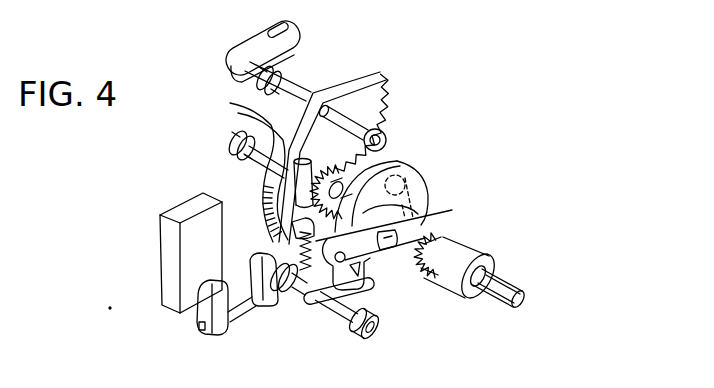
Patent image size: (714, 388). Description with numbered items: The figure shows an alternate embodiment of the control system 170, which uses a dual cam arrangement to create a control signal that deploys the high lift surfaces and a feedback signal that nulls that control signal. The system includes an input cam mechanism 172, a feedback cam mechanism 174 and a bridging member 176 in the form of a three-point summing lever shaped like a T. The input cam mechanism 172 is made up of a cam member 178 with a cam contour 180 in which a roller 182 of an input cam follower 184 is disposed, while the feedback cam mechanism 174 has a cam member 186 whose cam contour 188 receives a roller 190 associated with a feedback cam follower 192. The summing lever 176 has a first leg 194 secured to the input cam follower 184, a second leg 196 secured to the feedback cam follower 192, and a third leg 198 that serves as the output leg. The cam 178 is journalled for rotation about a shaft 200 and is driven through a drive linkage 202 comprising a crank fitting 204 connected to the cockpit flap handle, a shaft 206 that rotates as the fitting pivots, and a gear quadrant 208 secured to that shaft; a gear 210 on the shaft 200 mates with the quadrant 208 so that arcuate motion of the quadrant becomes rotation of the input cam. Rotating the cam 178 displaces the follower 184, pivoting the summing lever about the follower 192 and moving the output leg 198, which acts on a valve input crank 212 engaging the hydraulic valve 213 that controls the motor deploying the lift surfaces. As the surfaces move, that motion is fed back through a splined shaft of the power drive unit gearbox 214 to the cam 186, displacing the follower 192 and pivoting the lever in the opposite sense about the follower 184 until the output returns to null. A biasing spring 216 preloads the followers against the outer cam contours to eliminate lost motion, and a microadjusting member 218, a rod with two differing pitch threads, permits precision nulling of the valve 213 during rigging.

The control system 170 is at (448, 139).
The input cam mechanism 172 is at (281, 148).
The feedback cam mechanism 174 is at (428, 192).
The bridging member 176 is at (358, 222).
The cam member 178 is at (268, 170).
The cam contour 180 is at (287, 207).
The roller 182 is at (293, 230).
The input cam follower 184 is at (299, 242).
The cam member 186 is at (390, 161).
The cam contour 188 is at (405, 185).
The roller 190 is at (428, 236).
The feedback cam follower 192 is at (365, 250).
The first leg 194 is at (383, 330).
The second leg 196 is at (380, 250).
The third leg 198 is at (385, 252).
The shaft 200 is at (263, 125).
The drive linkage 202 is at (304, 71).
The crank fitting 204 is at (262, 44).
The shaft 206 is at (317, 95).
The gear quadrant 208 is at (392, 82).
The gear 210 is at (380, 158).
The valve input crank 212 is at (326, 300).
The hydraulic valve 213 is at (163, 257).
The power drive unit gearbox 214 is at (502, 268).
The biasing means 216 is at (297, 303).
The microadjusting member 218 is at (236, 334).